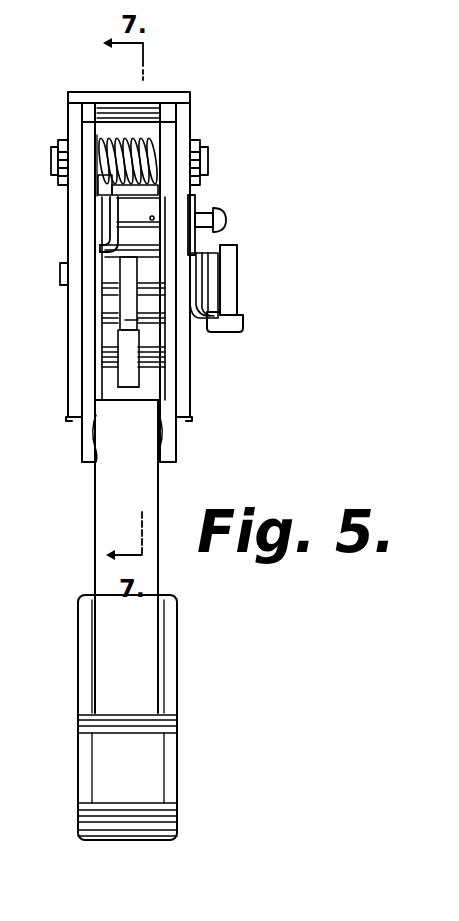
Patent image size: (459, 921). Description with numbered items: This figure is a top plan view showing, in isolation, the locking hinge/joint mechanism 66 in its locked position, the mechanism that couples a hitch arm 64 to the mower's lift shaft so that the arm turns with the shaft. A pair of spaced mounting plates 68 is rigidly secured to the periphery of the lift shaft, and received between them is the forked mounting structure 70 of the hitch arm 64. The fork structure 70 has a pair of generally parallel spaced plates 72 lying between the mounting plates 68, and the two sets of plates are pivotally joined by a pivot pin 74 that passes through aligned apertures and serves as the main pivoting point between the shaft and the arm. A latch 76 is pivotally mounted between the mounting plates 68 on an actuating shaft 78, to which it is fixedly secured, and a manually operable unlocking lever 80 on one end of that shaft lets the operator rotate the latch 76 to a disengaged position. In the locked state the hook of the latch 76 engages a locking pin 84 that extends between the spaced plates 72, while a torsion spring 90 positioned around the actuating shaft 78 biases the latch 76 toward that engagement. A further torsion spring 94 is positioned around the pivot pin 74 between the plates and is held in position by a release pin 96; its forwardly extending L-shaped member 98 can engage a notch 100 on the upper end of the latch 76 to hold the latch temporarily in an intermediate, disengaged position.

The hitch arm 64 is at (95, 505).
The locking hinge/joint mechanism 66 is at (243, 155).
The mounting plates 68 is at (77, 420).
The forked mounting structure 70 is at (176, 452).
The spaced plates 72 is at (87, 355).
The pivot pin 74 is at (203, 148).
The latch 76 is at (122, 282).
The actuating shaft 78 is at (66, 305).
The unlocking lever 80 is at (232, 287).
The locking pin 84 is at (148, 367).
The torsion spring 90 is at (208, 250).
The torsion spring 94 is at (112, 138).
The release pin 96 is at (218, 212).
The L-shaped member 98 is at (102, 251).
The notch 100 is at (132, 326).